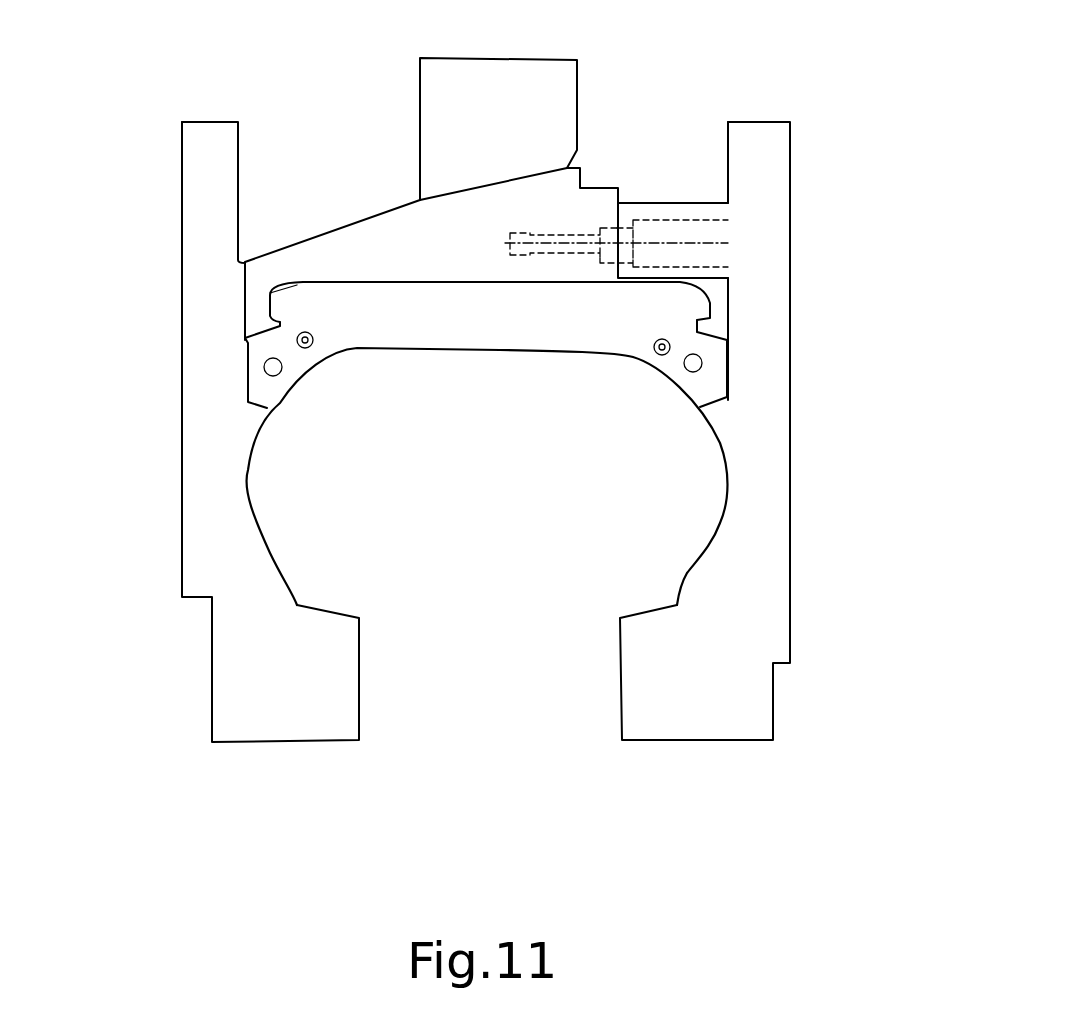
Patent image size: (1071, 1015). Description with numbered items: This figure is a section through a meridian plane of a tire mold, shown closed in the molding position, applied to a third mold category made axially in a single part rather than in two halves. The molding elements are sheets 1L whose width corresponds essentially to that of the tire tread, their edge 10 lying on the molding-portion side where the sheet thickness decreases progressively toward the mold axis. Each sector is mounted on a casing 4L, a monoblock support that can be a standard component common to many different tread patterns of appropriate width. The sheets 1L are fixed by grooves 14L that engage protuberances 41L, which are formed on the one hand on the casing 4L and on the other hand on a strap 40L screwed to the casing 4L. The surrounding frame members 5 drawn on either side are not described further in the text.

The frame member 5 is at (202, 203).
The casing 4L is at (378, 245).
The strap 40L is at (670, 213).
The protuberances 41L is at (697, 325).
The grooves 14L is at (277, 325).
The sheets 1L is at (480, 322).
The edge of the sheets 10 is at (548, 355).